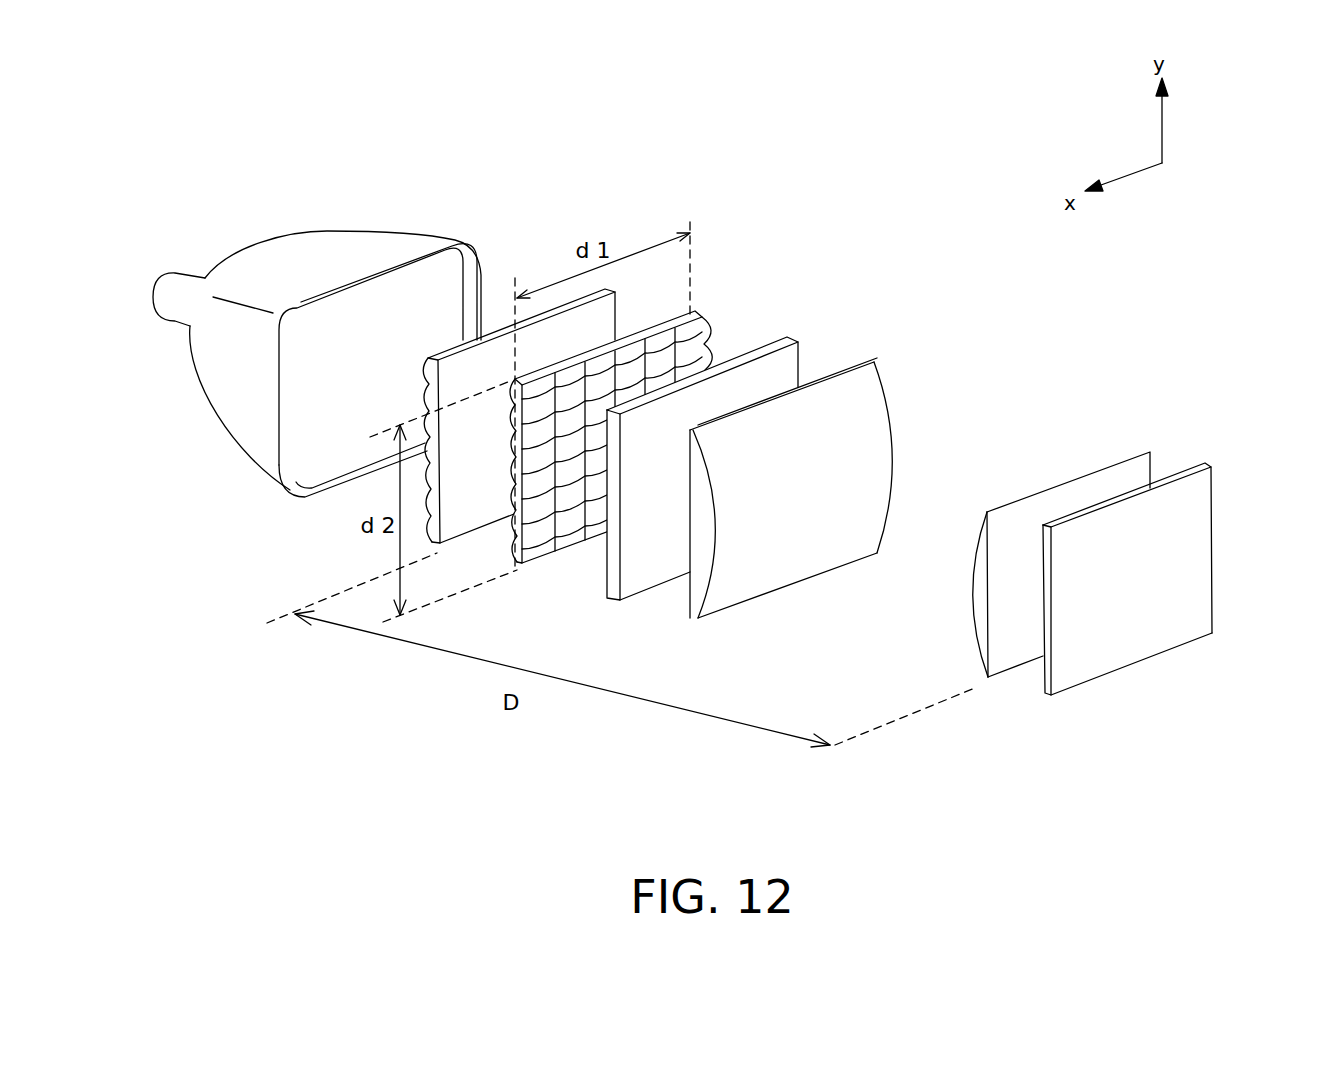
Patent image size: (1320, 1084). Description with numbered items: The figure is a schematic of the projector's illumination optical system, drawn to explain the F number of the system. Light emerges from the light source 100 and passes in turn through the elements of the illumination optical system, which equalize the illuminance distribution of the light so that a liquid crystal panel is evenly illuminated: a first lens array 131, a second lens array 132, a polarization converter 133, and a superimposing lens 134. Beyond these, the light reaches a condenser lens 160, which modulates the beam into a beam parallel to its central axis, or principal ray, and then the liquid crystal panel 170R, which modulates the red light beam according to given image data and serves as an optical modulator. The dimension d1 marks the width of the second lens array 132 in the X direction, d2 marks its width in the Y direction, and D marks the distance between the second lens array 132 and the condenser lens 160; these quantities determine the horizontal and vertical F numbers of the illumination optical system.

The light source 100 is at (387, 237).
The first lens array 131 is at (497, 330).
The second lens array 132 is at (667, 312).
The polarization converter 133 is at (773, 340).
The superimposing lens 134 is at (853, 358).
The condenser lens 160 is at (1098, 475).
The liquid crystal panel 170R is at (1193, 468).